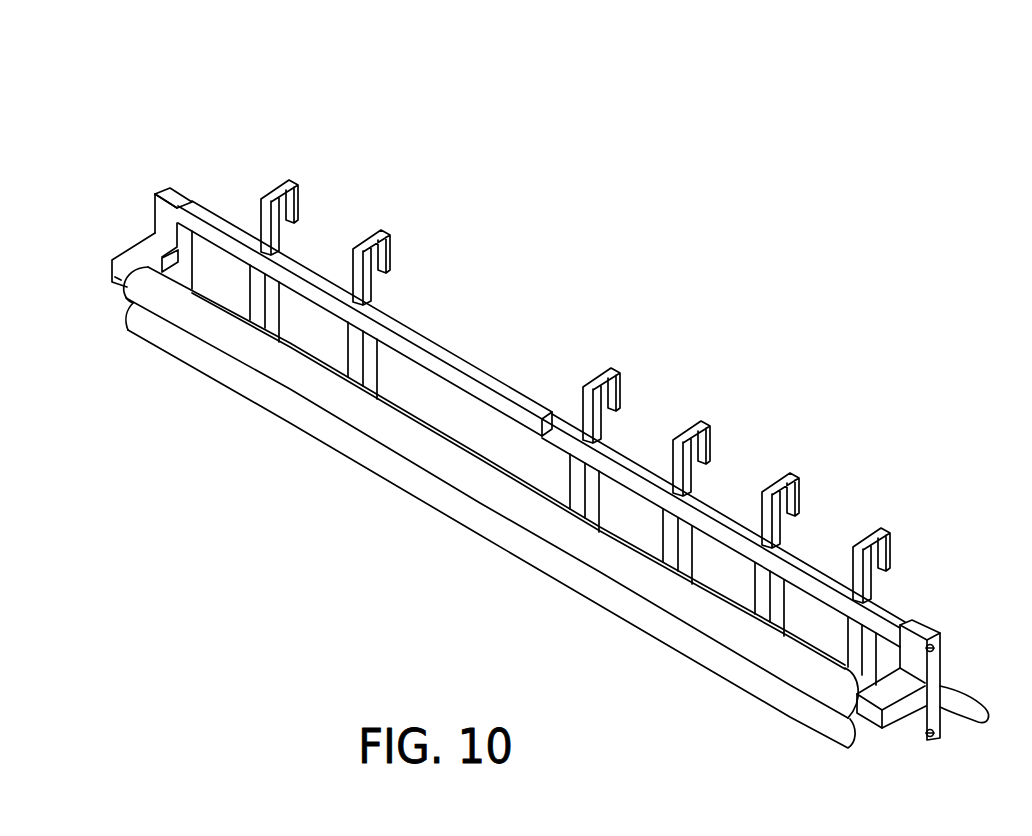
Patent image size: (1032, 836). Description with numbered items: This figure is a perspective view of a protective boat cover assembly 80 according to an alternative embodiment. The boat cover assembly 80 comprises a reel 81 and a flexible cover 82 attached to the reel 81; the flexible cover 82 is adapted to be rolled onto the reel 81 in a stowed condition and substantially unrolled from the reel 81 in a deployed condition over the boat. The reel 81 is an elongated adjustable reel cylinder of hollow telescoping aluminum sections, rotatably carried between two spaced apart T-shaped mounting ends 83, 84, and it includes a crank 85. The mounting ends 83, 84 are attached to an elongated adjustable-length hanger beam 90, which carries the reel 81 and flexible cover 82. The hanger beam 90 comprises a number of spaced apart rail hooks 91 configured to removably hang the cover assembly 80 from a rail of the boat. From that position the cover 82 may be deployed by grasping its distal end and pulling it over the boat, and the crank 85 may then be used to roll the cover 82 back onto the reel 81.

The boat cover assembly 80 is at (151, 124).
The reel 81 is at (108, 268).
The flexible cover 82 is at (290, 405).
The mounting end 83 is at (138, 237).
The mounting end 84 is at (942, 683).
The crank 85 is at (907, 716).
The hanger beam 90 is at (492, 382).
The rail hooks 91 is at (296, 220).